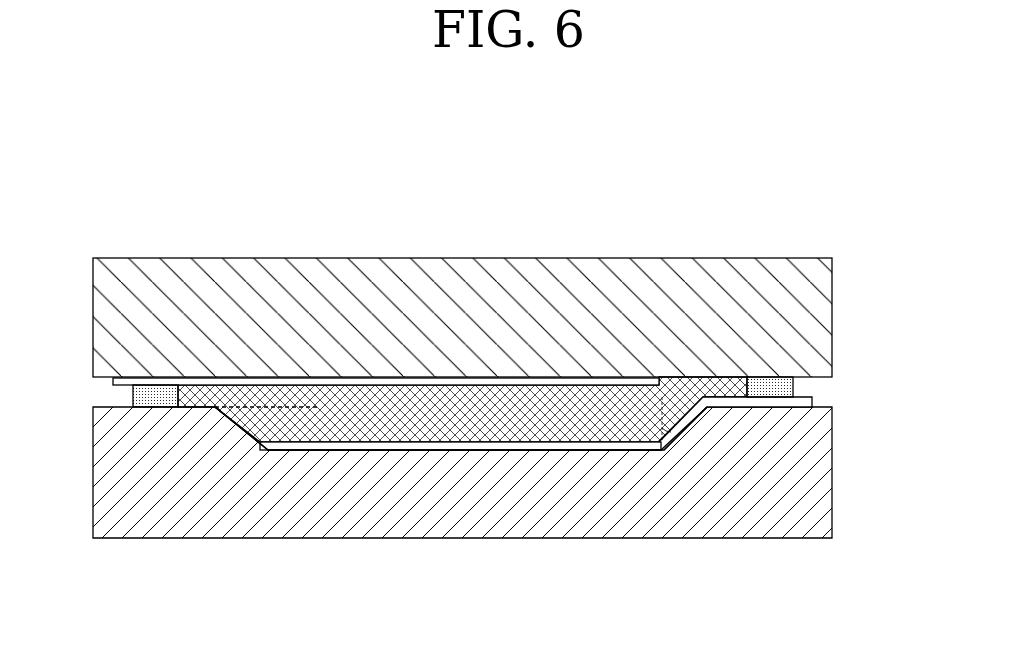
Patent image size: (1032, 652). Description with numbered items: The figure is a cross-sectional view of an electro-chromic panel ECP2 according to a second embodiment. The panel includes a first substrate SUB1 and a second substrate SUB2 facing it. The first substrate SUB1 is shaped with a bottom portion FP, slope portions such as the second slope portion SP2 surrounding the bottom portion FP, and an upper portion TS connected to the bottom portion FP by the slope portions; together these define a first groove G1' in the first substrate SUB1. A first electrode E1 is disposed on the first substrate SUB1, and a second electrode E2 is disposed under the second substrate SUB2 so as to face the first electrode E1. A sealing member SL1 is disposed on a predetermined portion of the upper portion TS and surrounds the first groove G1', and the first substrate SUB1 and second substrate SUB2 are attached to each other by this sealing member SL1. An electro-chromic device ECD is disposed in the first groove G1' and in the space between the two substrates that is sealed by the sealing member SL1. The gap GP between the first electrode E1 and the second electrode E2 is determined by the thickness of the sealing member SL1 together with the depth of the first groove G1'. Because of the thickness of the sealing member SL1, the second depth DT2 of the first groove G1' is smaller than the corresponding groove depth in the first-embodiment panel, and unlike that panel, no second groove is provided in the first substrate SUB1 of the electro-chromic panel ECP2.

The electro-chromic panel ECP2 is at (717, 207).
The second substrate SUB2 is at (803, 318).
The first substrate SUB1 is at (815, 472).
The sealing member SL1 is at (133, 395).
The second electrode E2 is at (513, 383).
The first electrode E1 is at (512, 452).
The first groove G1' is at (462, 310).
The upper portion TS is at (801, 409).
The second slope portion SP2 is at (240, 427).
The bottom portion FP is at (603, 453).
The electro-chromic device ECD is at (413, 425).
The second depth DT2 is at (311, 409).
The gap GP is at (462, 388).